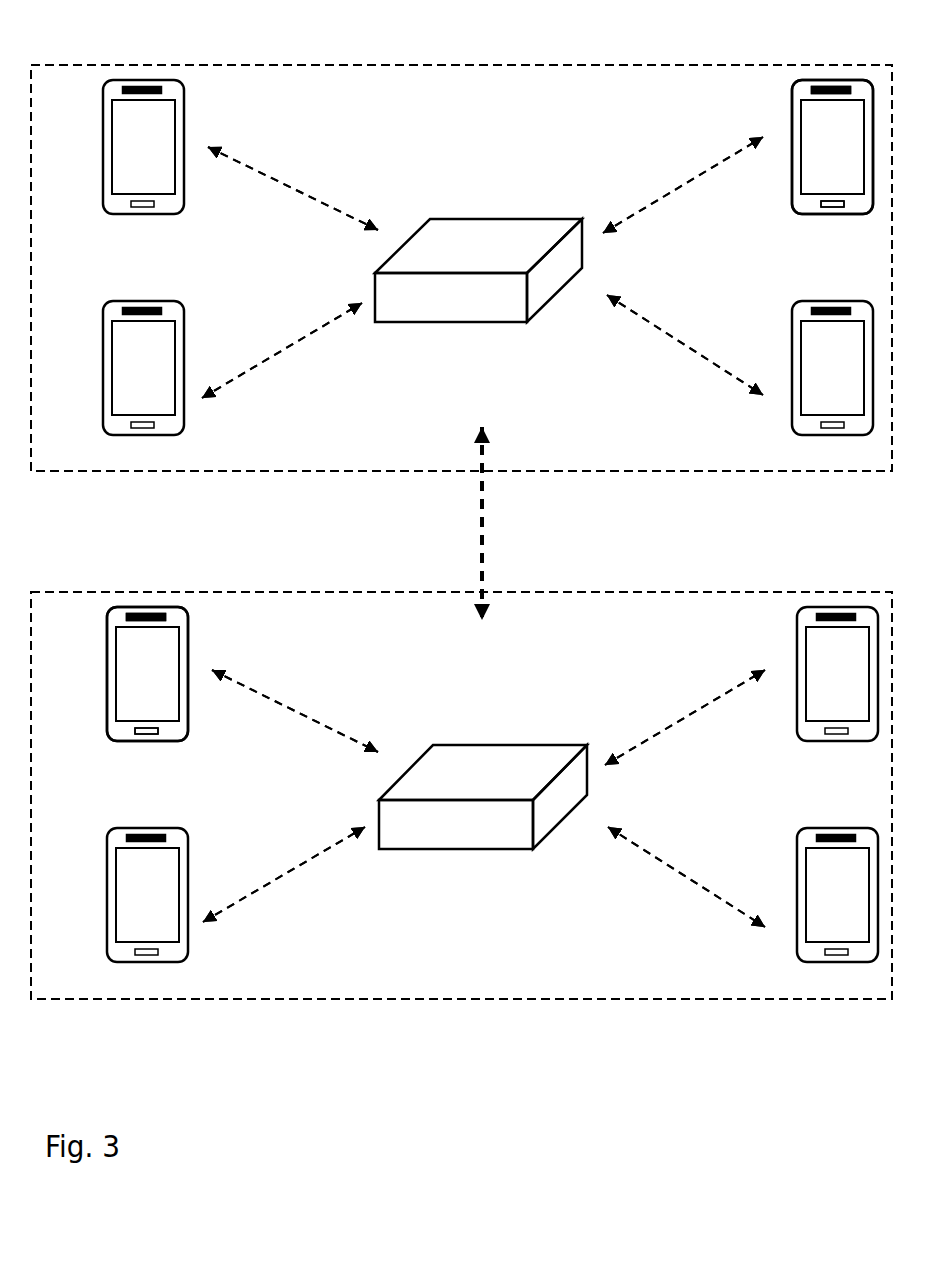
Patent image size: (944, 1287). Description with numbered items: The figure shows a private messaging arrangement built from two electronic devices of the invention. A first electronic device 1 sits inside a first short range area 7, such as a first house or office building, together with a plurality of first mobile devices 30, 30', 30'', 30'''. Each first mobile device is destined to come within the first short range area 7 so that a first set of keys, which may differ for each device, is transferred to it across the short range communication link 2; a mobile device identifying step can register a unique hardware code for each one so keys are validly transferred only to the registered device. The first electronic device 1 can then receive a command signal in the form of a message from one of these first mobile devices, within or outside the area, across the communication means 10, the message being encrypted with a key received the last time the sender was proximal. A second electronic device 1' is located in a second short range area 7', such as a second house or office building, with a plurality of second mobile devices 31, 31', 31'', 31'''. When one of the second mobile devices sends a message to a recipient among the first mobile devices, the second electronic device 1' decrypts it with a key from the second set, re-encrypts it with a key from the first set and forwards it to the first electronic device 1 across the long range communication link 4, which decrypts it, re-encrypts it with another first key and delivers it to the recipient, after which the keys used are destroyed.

The first electronic device 1 is at (478, 270).
The second electronic device 1' is at (483, 797).
The short range communication link 2 is at (483, 532).
The communication means 10 is at (483, 532).
The long range communication link 4 is at (497, 523).
The first short range area 7 is at (461, 235).
The second short range area 7' is at (461, 761).
The first mobile device 30 is at (113, 158).
The first mobile device 30' is at (781, 172).
The first mobile device 30'' is at (110, 375).
The first mobile device 30''' is at (796, 373).
The second mobile device 31 is at (115, 700).
The second mobile device 31' is at (805, 684).
The second mobile device 31'' is at (111, 902).
The second mobile device 31''' is at (799, 903).